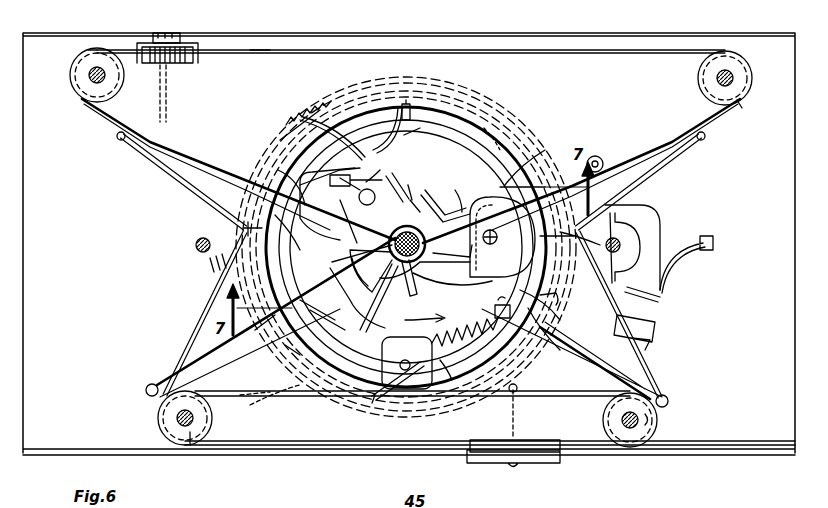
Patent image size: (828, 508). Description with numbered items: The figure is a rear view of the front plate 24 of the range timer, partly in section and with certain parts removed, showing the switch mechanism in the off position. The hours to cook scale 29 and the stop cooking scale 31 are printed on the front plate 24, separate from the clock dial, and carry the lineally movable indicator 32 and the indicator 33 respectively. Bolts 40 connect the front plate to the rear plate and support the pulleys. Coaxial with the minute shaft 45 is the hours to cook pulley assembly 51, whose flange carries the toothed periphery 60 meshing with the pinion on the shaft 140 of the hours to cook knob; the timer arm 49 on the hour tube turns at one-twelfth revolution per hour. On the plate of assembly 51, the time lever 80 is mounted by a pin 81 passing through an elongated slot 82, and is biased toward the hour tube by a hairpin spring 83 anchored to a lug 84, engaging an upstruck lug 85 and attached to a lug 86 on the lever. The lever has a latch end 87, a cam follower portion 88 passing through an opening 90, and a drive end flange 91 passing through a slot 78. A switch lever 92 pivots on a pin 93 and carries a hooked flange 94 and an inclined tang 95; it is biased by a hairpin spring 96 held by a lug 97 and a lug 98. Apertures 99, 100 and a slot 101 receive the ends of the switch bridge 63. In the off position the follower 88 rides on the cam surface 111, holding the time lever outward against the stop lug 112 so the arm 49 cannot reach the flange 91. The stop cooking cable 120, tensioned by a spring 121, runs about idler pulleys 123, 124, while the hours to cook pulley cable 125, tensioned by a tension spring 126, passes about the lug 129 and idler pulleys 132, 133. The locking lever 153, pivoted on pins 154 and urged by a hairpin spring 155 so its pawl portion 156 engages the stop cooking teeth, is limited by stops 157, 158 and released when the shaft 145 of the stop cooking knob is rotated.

The front plate 24 is at (770, 452).
The hours to cook scale 29 is at (263, 402).
The stop cooking scale 31 is at (617, 90).
The lineal movable indicator 32 is at (543, 457).
The lineally movable indicator 33 is at (190, 40).
The bolts 40 is at (90, 75).
The shaft 45 is at (387, 261).
The timer arm 49 is at (415, 205).
The hours to cook pulley assembly 51 is at (488, 130).
The toothed periphery 60 is at (308, 108).
The switch bridge 63 is at (317, 341).
The slot 78 is at (412, 185).
The time lever 80 is at (278, 170).
The pin 81 is at (315, 208).
The elongated slot 82 is at (365, 178).
The hairpin spring 83 is at (370, 118).
The lug 84 is at (420, 110).
The upstruck lug 85 is at (340, 115).
The lug 86 is at (307, 183).
The latch end 87 is at (378, 322).
The cam follower portion 88 is at (246, 228).
The opening 90 is at (332, 263).
The drive end flange 91 is at (374, 208).
The switch lever 92 is at (582, 248).
The pin 93 is at (498, 226).
The hooked flange 94 is at (457, 241).
The inclined tang 95 is at (446, 223).
The hairpin spring 96 is at (515, 295).
The lug 97 is at (550, 296).
The lug 98 is at (540, 330).
The aperture 99 is at (460, 212).
The aperture 100 is at (508, 187).
The slot 101 is at (280, 363).
The cam surface 111 is at (218, 263).
The stop lug 112 is at (256, 337).
The stop cooking cable 120 is at (260, 50).
The spring 121 is at (153, 65).
The idler pulley 123 is at (92, 50).
The idler pulley 124 is at (738, 102).
The hours to cook pulley cable 125 is at (660, 368).
The tension spring 126 is at (448, 372).
The lug 129 is at (393, 392).
The idler pulley 132 is at (190, 432).
The idler pulley 133 is at (650, 430).
The shaft 140 is at (195, 246).
The shaft 145 is at (622, 243).
The locking lever 153 is at (640, 206).
The pins 154 is at (604, 164).
The hairpin spring 155 is at (706, 250).
The pawl portion 156 is at (660, 291).
The stop 157 is at (648, 340).
The stop 158 is at (656, 326).